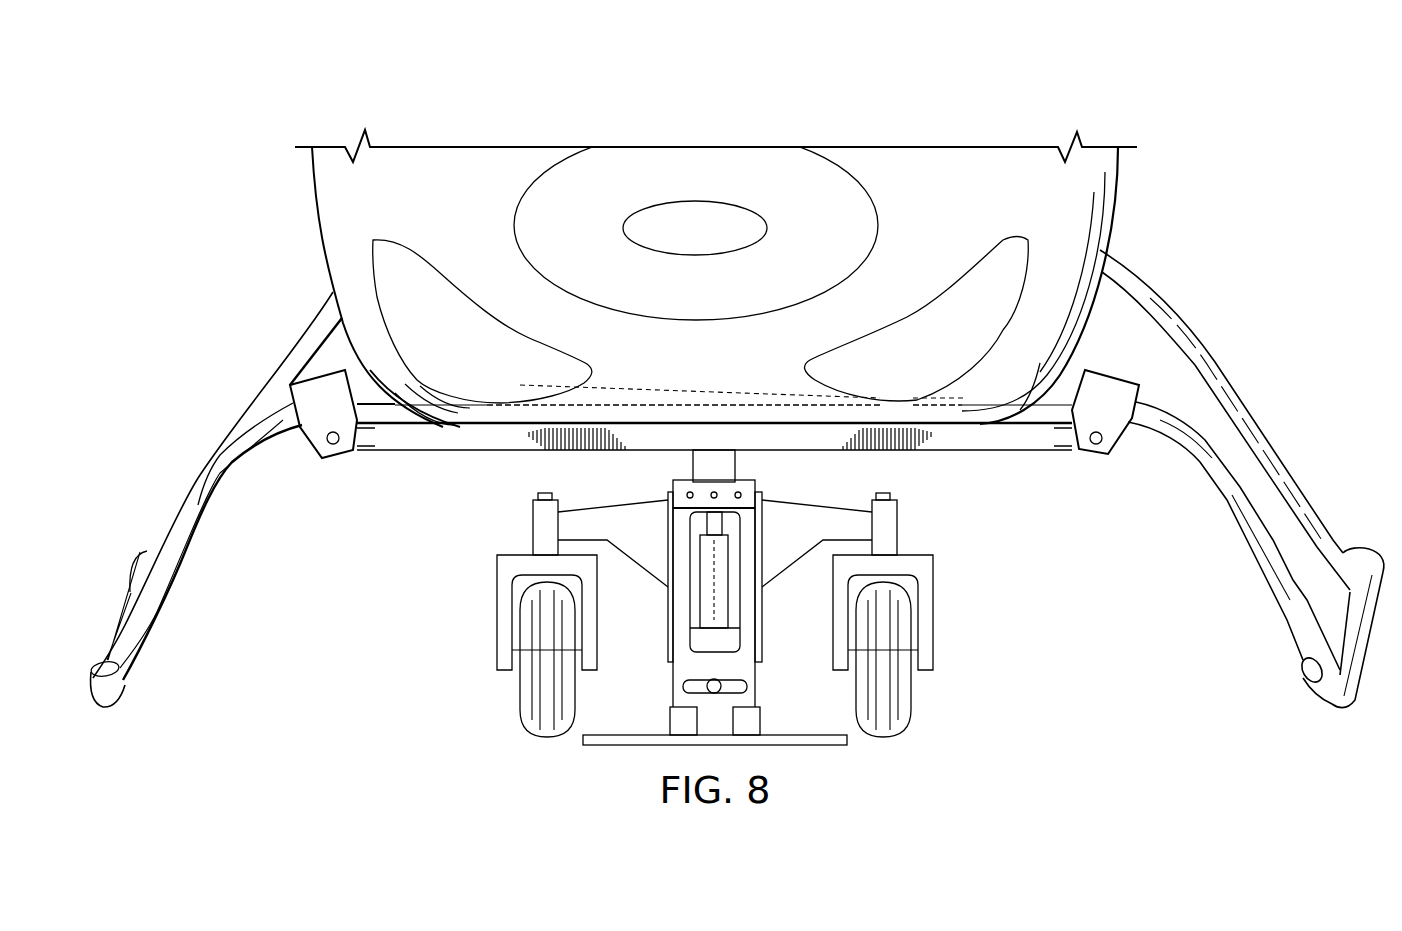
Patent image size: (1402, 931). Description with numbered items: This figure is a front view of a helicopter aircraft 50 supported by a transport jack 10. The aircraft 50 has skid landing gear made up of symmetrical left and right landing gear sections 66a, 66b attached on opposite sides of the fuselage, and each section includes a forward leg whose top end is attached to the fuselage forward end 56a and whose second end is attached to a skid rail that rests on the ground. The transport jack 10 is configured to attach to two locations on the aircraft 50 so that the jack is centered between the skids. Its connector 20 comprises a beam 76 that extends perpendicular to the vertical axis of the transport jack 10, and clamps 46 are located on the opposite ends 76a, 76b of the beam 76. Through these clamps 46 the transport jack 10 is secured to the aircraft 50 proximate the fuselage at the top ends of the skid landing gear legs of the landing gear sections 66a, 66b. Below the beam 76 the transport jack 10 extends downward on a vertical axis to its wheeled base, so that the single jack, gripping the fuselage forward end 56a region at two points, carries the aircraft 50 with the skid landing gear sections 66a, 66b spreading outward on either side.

The transport jack 10 is at (466, 629).
The connector 20 is at (946, 517).
The clamps 46 is at (316, 377).
The aircraft 50 is at (505, 125).
The fuselage forward end 56a is at (512, 378).
The left landing gear section 66a is at (1252, 366).
The right landing gear section 66b is at (180, 445).
The beam 76 is at (445, 452).
The first end of beam 76a is at (368, 452).
The second end of beam 76b is at (1057, 452).